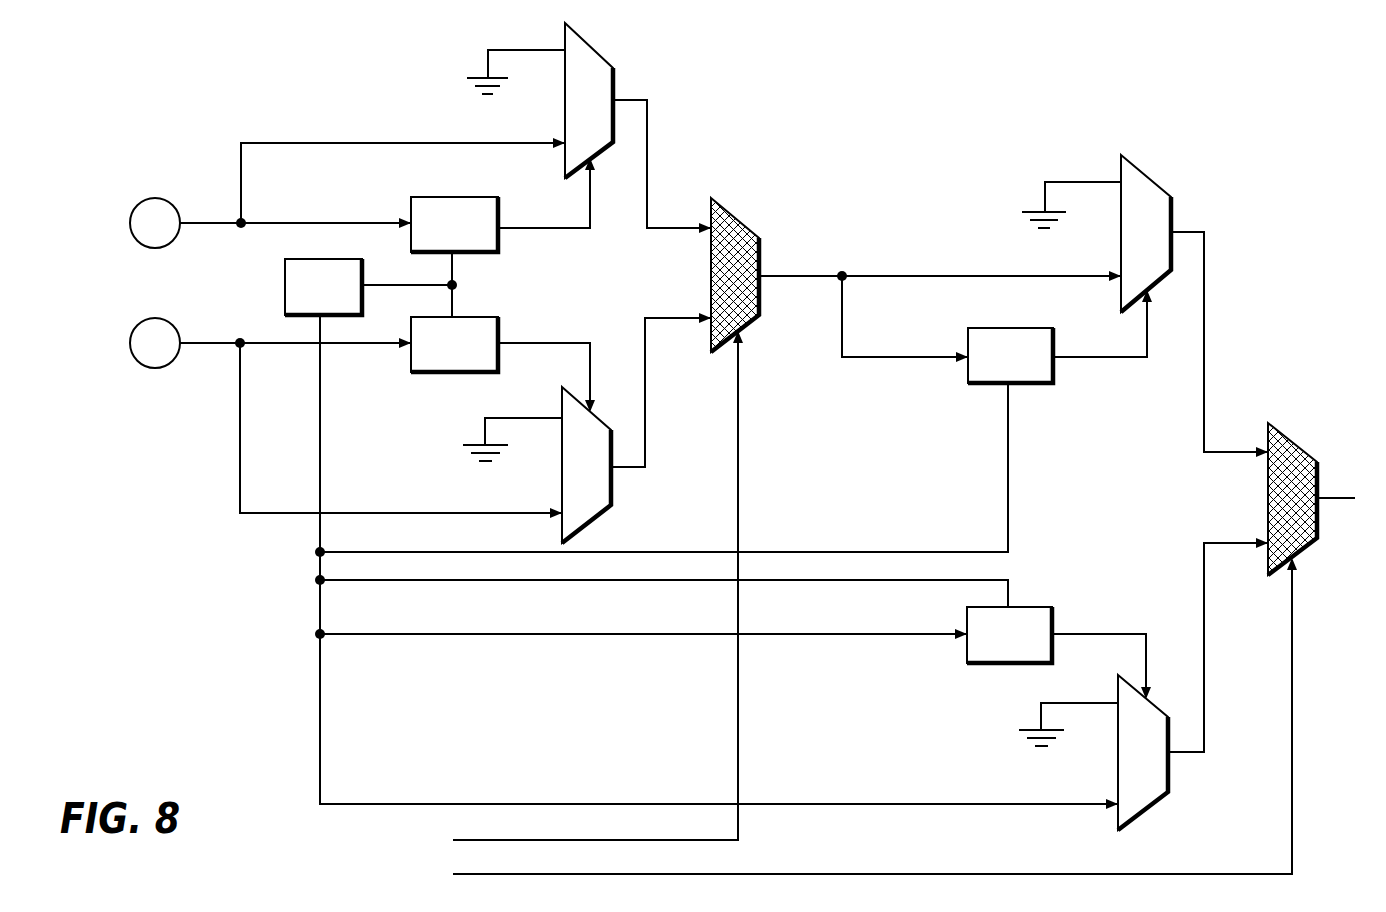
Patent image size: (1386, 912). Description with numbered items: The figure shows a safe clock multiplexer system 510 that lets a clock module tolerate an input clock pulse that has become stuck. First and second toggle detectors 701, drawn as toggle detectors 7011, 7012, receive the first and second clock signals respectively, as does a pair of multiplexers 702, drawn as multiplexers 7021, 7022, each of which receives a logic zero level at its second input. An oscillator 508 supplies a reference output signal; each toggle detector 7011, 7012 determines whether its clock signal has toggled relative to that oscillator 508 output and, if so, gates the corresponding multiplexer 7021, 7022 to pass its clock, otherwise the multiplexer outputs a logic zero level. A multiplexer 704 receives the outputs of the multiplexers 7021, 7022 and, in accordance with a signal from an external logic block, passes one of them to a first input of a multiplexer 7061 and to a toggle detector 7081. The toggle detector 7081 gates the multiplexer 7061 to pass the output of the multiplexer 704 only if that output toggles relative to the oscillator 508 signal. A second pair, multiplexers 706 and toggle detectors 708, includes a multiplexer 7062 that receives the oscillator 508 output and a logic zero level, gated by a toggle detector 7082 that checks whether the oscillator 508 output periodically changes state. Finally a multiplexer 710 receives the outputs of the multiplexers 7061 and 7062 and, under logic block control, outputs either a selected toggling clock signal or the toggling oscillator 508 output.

The safe clock multiplexer system 510 is at (148, 735).
The oscillator 508 is at (285, 288).
The toggle detectors 701 is at (458, 288).
The first toggle detector 7011 is at (435, 197).
The second toggle detector 7012 is at (445, 373).
The multiplexers 702 is at (593, 279).
The first multiplexer 7021 is at (592, 44).
The second multiplexer 7022 is at (603, 511).
The multiplexer 704 is at (733, 212).
The multiplexers 706 is at (1143, 494).
The multiplexer 7061 is at (1147, 178).
The multiplexer 7062 is at (1140, 818).
The toggle detectors 708 is at (1031, 508).
The toggle detector 7081 is at (1030, 387).
The toggle detector 7082 is at (997, 665).
The multiplexer 710 is at (1317, 530).